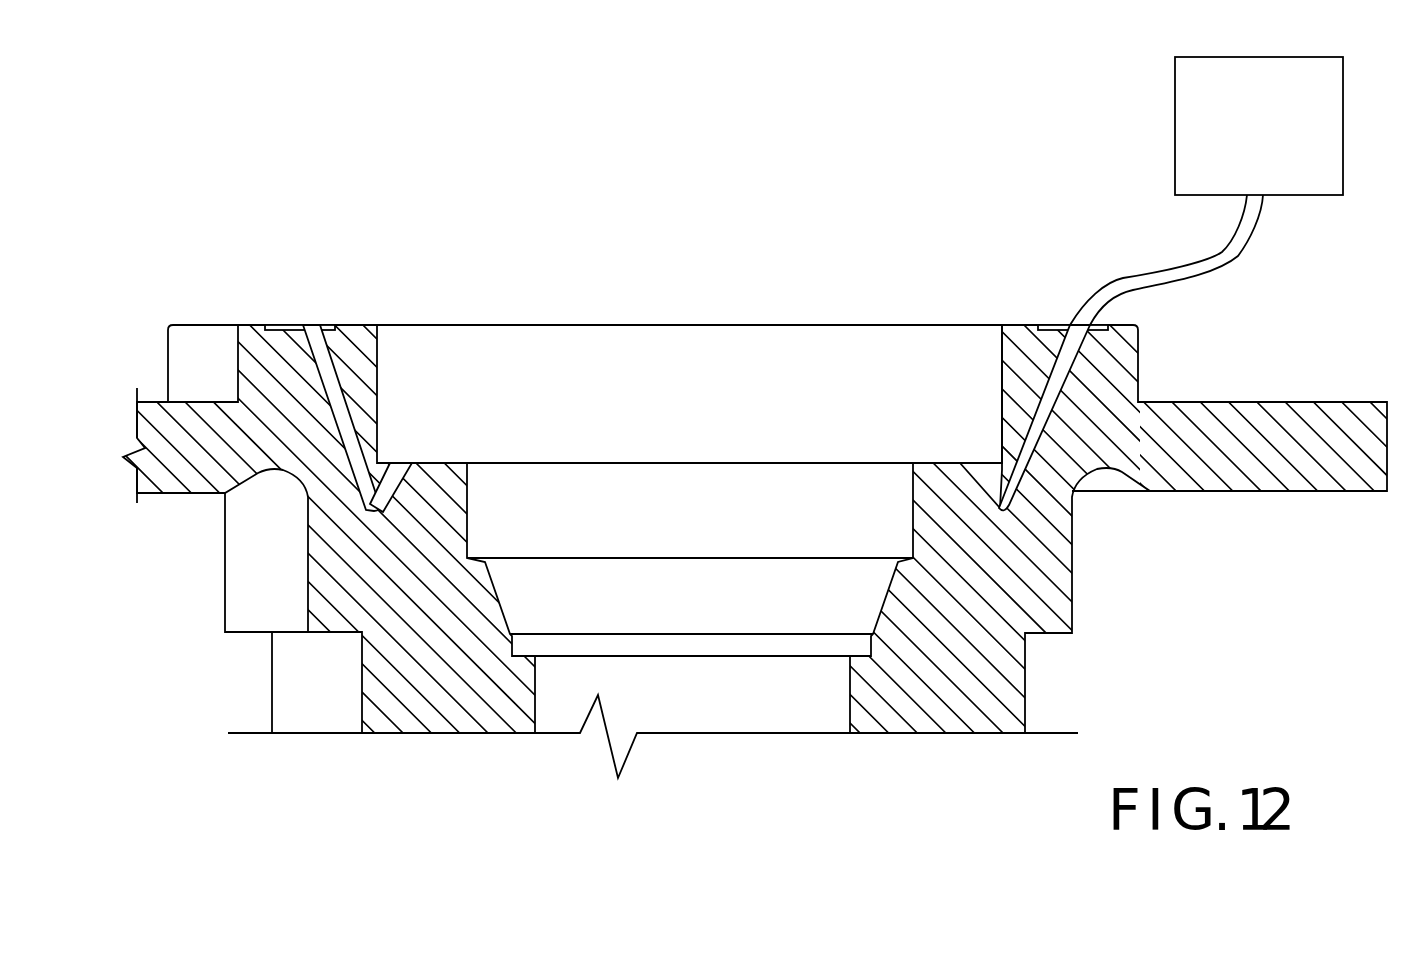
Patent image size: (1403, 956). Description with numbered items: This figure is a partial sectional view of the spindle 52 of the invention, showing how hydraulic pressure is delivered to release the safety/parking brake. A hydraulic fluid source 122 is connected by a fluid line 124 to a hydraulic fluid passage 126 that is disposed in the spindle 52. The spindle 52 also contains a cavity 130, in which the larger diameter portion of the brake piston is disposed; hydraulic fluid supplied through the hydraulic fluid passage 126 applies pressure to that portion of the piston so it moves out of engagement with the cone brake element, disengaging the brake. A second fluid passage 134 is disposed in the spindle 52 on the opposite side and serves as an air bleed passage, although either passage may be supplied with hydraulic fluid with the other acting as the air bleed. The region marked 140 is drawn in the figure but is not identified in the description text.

The spindle 52 is at (963, 733).
The hydraulic fluid source 122 is at (1335, 148).
The fluid line 124 is at (1218, 258).
The hydraulic fluid passage 126 is at (1073, 376).
The cavity 130 is at (707, 402).
The second fluid passage 134 is at (338, 398).
The pocket 140 is at (997, 363).